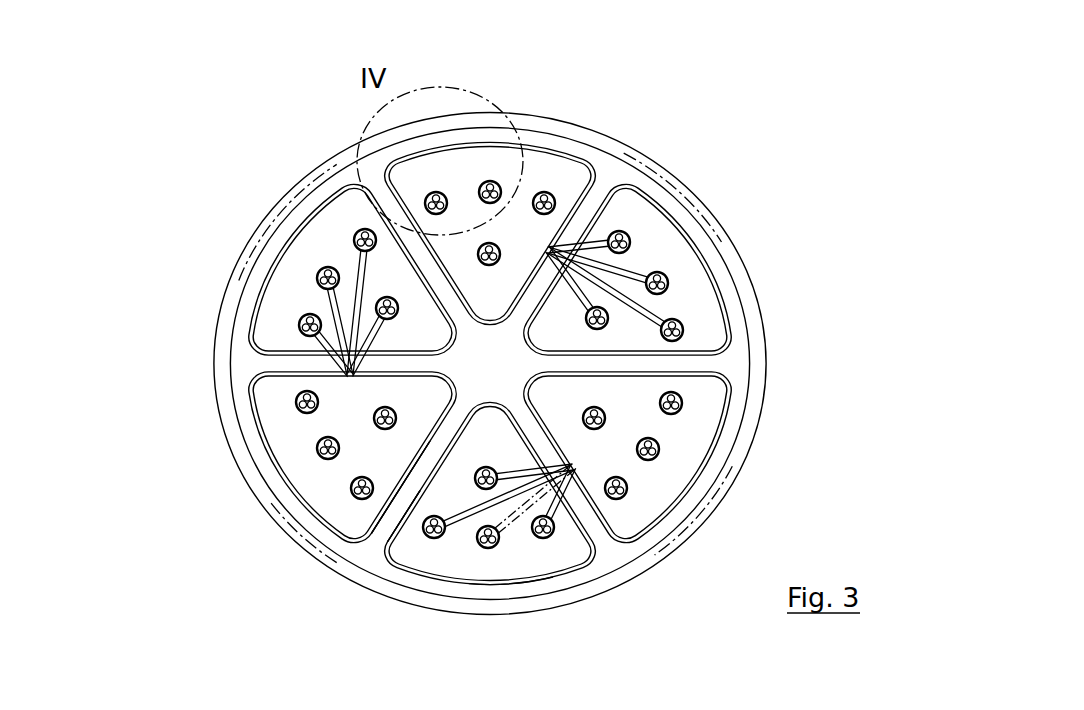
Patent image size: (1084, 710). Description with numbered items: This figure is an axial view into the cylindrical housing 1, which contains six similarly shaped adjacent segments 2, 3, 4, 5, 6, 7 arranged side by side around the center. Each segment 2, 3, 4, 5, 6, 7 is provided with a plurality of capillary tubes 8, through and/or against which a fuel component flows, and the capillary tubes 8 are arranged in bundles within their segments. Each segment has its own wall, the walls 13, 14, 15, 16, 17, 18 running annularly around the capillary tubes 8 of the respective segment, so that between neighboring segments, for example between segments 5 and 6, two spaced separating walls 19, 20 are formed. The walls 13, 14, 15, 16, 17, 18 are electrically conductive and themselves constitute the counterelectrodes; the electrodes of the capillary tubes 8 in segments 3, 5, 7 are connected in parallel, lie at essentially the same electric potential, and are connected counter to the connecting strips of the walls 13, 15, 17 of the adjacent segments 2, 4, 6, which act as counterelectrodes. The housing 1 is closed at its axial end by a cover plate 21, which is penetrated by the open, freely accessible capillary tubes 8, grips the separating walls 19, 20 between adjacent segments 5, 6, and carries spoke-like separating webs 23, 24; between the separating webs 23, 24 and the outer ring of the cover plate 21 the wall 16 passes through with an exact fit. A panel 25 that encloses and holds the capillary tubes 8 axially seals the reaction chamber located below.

The cylindrical housing 1 is at (292, 192).
The segment 2 is at (524, 142).
The segment 3 is at (706, 250).
The segment 4 is at (707, 475).
The segment 5 is at (487, 593).
The segment 6 is at (275, 478).
The segment 7 is at (273, 257).
The capillary tubes 8 is at (312, 450).
The wall 13 is at (583, 150).
The wall 14 is at (728, 292).
The wall 15 is at (727, 437).
The wall 16 is at (570, 577).
The wall 17 is at (250, 407).
The wall 18 is at (262, 300).
The separating wall 19 is at (409, 523).
The separating wall 20 is at (387, 505).
The cover plate 21 is at (662, 184).
The separating web 23 is at (398, 505).
The separating web 24 is at (580, 510).
The panel 25 is at (528, 567).